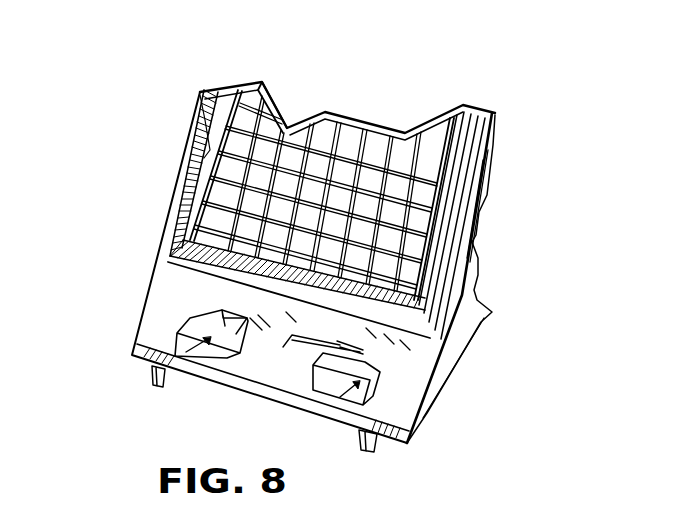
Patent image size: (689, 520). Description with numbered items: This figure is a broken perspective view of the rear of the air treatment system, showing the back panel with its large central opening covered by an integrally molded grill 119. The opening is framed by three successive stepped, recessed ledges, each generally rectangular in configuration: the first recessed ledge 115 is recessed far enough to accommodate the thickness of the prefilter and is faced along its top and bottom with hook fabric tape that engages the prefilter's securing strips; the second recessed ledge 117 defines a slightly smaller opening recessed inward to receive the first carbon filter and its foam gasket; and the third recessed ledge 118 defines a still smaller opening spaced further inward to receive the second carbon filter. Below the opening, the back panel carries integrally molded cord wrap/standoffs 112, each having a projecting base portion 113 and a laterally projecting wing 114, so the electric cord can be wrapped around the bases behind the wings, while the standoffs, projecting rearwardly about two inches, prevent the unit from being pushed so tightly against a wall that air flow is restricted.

The cord wrap/standoff 112 is at (185, 358).
The projecting base portion 113 is at (233, 323).
The laterally projecting wing 114 is at (178, 333).
The first recessed ledge 115 is at (200, 92).
The second recessed ledge 117 is at (263, 83).
The third recessed ledge 118 is at (242, 84).
The grill 119 is at (350, 127).